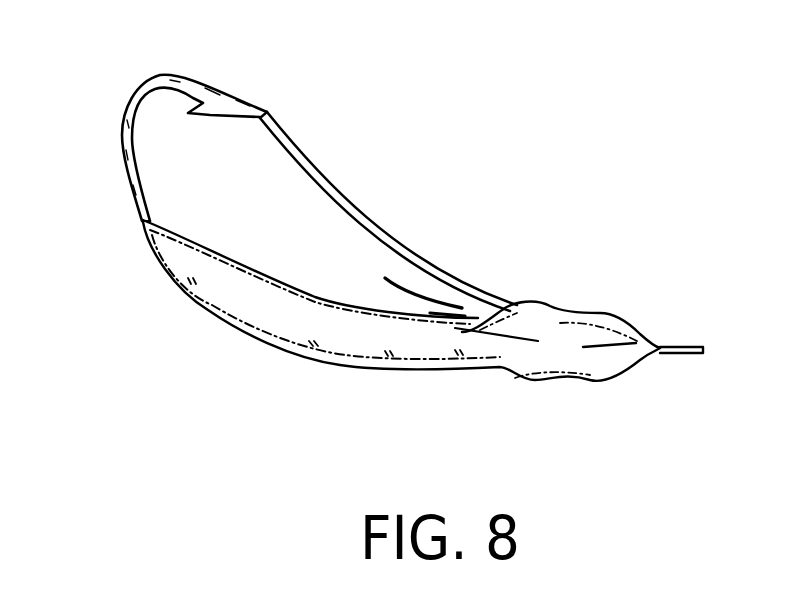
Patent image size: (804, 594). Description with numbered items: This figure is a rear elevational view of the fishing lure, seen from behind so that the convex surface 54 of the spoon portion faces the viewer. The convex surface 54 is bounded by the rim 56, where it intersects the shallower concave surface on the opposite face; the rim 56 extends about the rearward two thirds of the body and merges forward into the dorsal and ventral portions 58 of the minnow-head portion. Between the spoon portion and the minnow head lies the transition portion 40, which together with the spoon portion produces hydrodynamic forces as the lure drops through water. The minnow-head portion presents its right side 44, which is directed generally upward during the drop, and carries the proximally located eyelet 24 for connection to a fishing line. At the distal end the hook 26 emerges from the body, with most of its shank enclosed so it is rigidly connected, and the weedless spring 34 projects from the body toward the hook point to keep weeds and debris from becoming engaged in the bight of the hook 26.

The eyelet 24 is at (706, 348).
The hook 26 is at (136, 88).
The weedless spring 34 is at (348, 200).
The transition portion 40 is at (403, 284).
The right side 44 is at (617, 317).
The convex surface 54 is at (276, 325).
The rim 56 is at (219, 252).
The ventral portion 58 is at (577, 361).